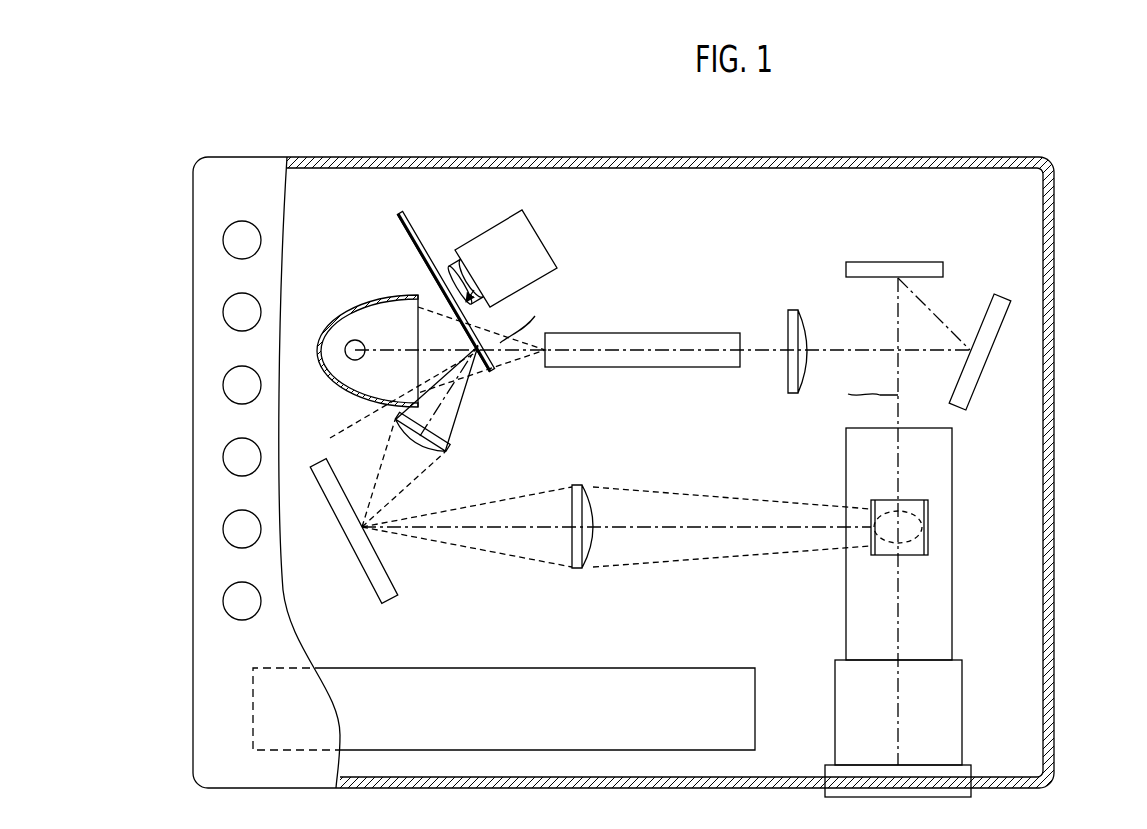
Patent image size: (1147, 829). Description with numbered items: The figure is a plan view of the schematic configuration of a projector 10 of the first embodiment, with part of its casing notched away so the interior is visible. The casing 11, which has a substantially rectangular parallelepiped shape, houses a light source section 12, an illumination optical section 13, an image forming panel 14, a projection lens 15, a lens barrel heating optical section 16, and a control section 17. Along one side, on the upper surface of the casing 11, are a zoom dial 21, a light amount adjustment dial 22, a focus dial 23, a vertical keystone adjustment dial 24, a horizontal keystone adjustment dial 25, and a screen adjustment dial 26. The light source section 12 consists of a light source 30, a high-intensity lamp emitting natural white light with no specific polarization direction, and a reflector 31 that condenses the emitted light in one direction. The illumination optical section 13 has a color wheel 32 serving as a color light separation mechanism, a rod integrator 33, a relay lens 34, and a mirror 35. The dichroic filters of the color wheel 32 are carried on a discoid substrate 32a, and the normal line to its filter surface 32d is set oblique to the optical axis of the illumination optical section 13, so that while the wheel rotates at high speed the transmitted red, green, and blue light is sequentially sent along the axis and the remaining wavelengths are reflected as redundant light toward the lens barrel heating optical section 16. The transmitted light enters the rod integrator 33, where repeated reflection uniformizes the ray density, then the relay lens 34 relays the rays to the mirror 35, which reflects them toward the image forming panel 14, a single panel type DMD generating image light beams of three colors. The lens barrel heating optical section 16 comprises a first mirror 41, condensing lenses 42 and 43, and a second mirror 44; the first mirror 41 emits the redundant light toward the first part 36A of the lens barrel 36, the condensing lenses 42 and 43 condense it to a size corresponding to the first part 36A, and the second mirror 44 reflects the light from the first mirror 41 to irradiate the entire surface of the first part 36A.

The projector 10 is at (1058, 156).
The casing 11 is at (1056, 262).
The light source section 12 is at (346, 294).
The illumination optical section 13 is at (582, 302).
The image forming panel 14 is at (860, 262).
The projection lens 15 is at (957, 575).
The lens barrel heating optical section 16 is at (563, 462).
The control section 17 is at (669, 668).
The zoom dial 21 is at (223, 601).
The light amount adjustment dial 22 is at (223, 529).
The focus dial 23 is at (223, 457).
The vertical keystone adjustment dial 24 is at (223, 385).
The horizontal keystone adjustment dial 25 is at (223, 312).
The screen adjustment dial 26 is at (223, 240).
The light source 30 is at (347, 344).
The reflector 31 is at (373, 295).
The color wheel 32 is at (416, 211).
The discoid substrate 32a is at (421, 240).
The filter surface 32d is at (411, 236).
The rod integrator 33 is at (644, 333).
The relay lens 34 is at (789, 310).
The mirror 35 is at (999, 297).
The lens barrel 36 is at (855, 597).
The first part 36A is at (928, 505).
The first mirror 41 is at (367, 590).
The condensing lens 42 is at (447, 441).
The condensing lens 43 is at (583, 570).
The second mirror 44 is at (871, 505).